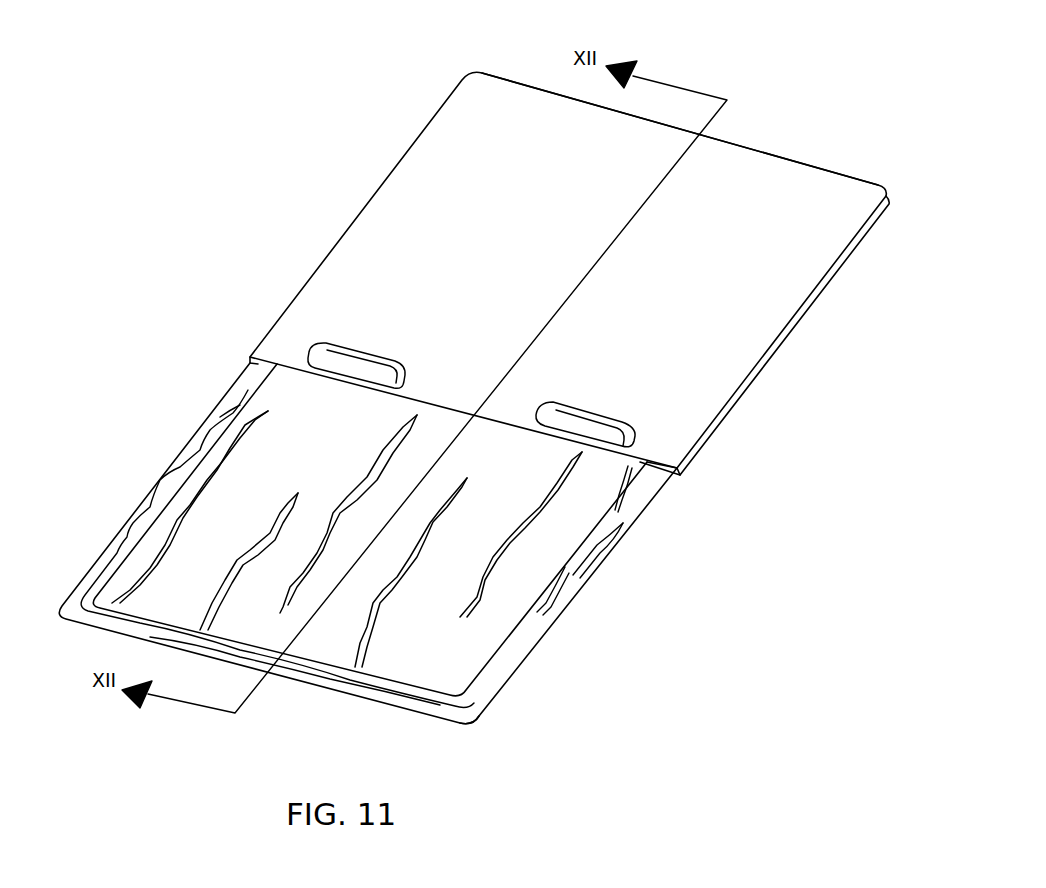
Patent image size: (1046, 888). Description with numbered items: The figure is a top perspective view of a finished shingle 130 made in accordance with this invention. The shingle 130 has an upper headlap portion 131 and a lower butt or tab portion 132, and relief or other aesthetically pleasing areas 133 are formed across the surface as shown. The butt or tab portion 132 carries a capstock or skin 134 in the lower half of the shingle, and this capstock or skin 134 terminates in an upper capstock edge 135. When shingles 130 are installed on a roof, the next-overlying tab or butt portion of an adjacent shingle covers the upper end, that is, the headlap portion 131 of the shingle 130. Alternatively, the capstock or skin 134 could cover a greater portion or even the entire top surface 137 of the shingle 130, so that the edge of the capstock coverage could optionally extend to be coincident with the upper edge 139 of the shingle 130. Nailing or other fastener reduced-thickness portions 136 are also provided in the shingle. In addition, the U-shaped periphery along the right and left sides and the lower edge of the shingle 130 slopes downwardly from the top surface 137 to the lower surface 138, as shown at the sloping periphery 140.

The shingle 130 is at (378, 167).
The headlap portion 131 is at (755, 310).
The butt or tab portion 132 is at (465, 665).
The relief or other aesthetically pleasing areas 133 is at (372, 634).
The capstock or skin 134 is at (570, 532).
The upper capstock edge 135 is at (635, 456).
The nailing or other fastener reduced-thickness portions 136 is at (335, 363).
The top surface 137 is at (490, 635).
The lower surface 138 is at (473, 720).
The upper edge 139 is at (778, 155).
The downwardly sloping periphery 140 is at (203, 440).